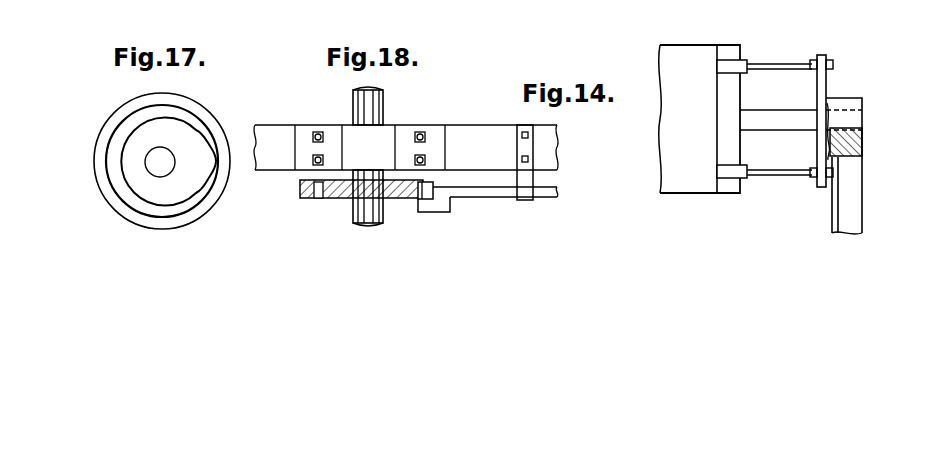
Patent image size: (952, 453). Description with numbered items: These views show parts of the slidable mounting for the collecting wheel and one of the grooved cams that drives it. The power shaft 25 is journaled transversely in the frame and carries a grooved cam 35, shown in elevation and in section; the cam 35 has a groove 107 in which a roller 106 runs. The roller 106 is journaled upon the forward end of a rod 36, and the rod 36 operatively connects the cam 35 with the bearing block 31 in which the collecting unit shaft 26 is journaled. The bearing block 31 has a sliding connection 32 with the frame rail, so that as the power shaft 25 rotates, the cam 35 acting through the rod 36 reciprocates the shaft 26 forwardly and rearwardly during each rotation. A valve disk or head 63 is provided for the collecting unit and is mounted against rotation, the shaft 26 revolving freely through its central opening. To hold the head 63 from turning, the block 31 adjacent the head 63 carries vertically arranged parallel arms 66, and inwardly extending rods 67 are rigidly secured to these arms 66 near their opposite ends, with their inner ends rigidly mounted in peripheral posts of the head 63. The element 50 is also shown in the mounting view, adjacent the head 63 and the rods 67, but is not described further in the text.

In FIG. 17, the grooved cam 35 is at (96, 160).
In FIG. 18, the grooved cam 35 is at (298, 186).
In FIG. 17, the groove 107 is at (206, 140).
In FIG. 18, the groove 107 is at (320, 200).
In FIG. 18, the power shaft 25 is at (387, 98).
In FIG. 18, the roller 106 is at (421, 201).
In FIG. 18, the rod 36 is at (500, 190).
In FIG. 14, the frame member 50 is at (699, 119).
In FIG. 14, the valve disk or head 63 is at (730, 95).
In FIG. 14, the inwardly extending rod 67 is at (773, 63).
In FIG. 14, the collecting unit axle or shaft 26 is at (784, 122).
In FIG. 14, the vertically-arranged parallel arm 66 is at (822, 84).
In FIG. 14, the bearing block 31 is at (848, 115).
In FIG. 14, the sliding connection 32 is at (856, 149).